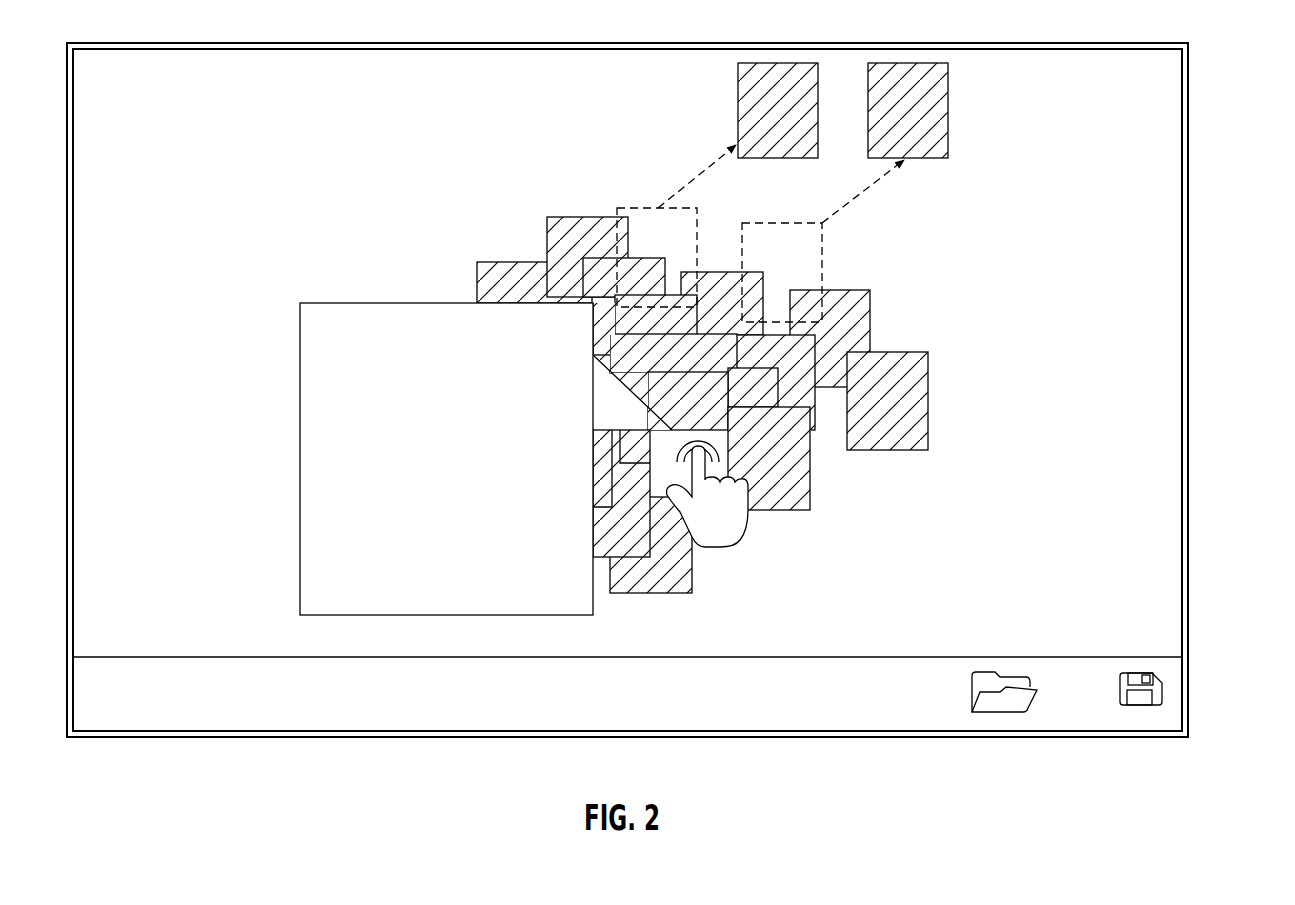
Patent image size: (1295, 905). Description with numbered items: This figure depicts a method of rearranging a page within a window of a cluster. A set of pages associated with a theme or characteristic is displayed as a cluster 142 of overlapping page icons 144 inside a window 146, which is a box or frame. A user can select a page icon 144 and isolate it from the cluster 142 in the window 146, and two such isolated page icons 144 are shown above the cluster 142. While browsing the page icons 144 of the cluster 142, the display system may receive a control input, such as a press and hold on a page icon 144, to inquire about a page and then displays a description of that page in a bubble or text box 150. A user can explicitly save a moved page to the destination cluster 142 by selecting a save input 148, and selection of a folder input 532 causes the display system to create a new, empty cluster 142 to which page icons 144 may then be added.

The cluster 142 is at (884, 512).
The page icon 144 is at (738, 110).
The window 146 is at (1190, 143).
The save input 148 is at (1152, 695).
The text box 150 is at (300, 400).
The folder input 532 is at (1007, 697).